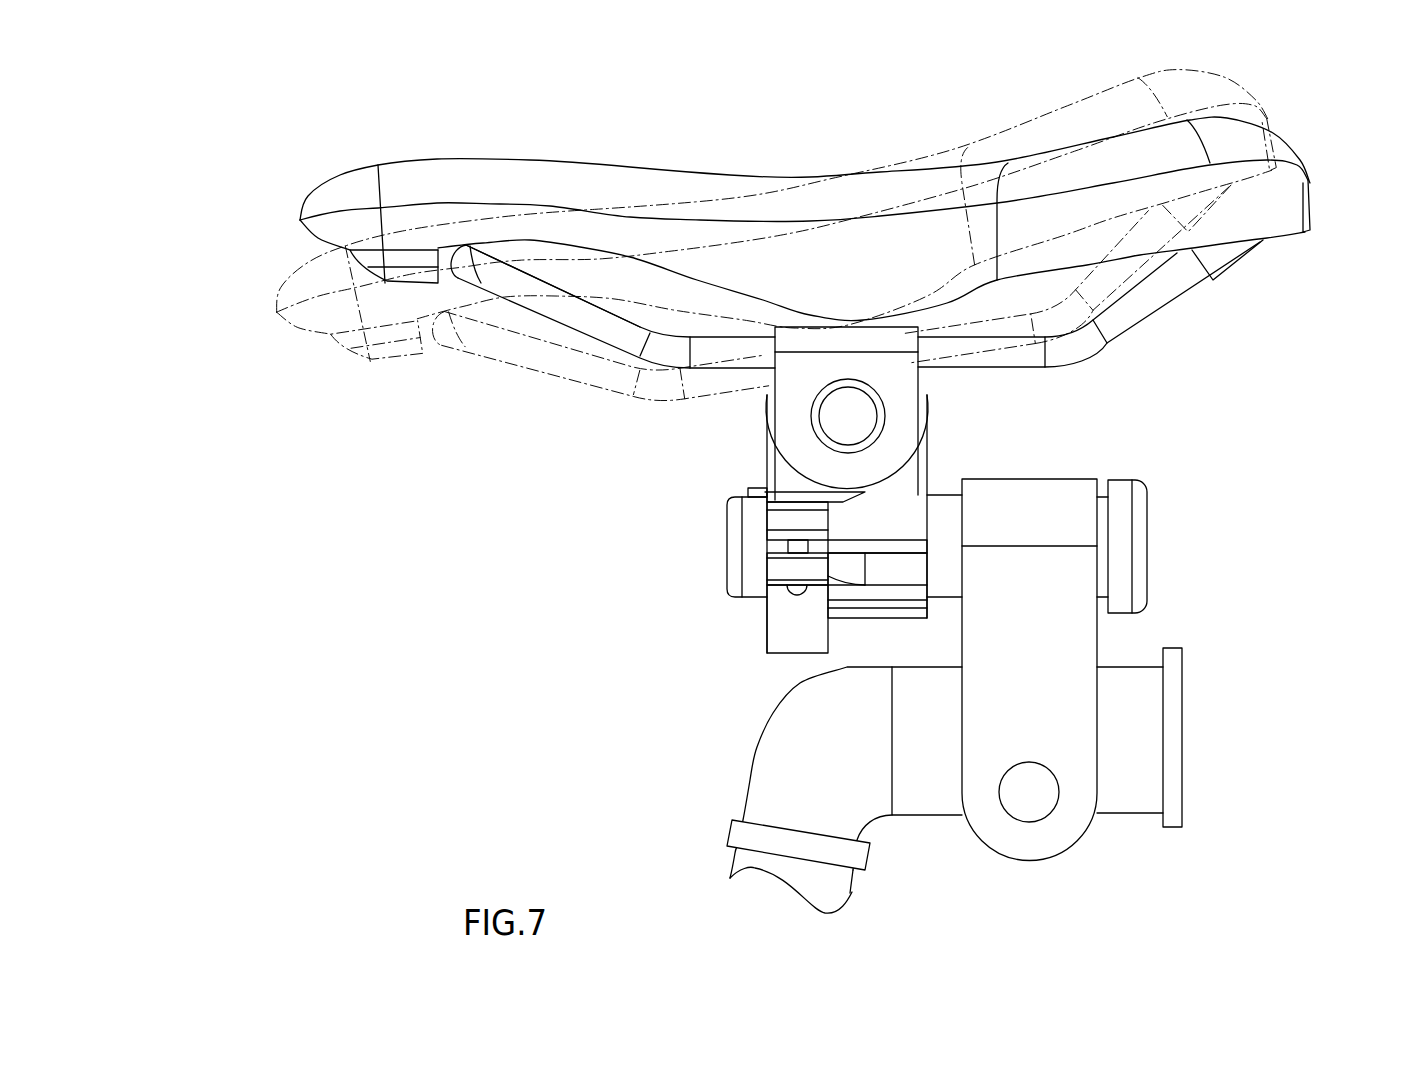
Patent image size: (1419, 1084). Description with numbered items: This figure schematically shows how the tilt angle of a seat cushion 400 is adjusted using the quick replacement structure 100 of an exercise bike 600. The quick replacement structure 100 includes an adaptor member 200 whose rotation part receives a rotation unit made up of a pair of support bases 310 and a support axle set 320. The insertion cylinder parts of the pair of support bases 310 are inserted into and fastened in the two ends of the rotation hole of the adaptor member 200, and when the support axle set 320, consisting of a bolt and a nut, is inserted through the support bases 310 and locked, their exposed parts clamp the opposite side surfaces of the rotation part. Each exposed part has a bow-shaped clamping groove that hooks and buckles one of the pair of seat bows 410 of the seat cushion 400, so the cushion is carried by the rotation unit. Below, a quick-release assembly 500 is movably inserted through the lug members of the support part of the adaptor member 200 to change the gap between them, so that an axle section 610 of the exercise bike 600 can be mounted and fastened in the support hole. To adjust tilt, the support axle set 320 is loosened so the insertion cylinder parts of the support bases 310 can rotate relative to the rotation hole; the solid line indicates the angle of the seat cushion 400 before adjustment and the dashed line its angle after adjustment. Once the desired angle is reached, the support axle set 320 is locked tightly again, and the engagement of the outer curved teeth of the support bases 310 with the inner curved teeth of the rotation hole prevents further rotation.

The quick replacement structure 100 is at (711, 615).
The adaptor member 200 is at (752, 427).
The support base 310 is at (780, 457).
The support axle set 320 is at (878, 428).
The seat cushion 400 is at (318, 168).
The seat bow 410 is at (582, 315).
The quick-release assembly 500 is at (763, 675).
The exercise bike 600 is at (1218, 718).
The axle section 610 is at (737, 540).